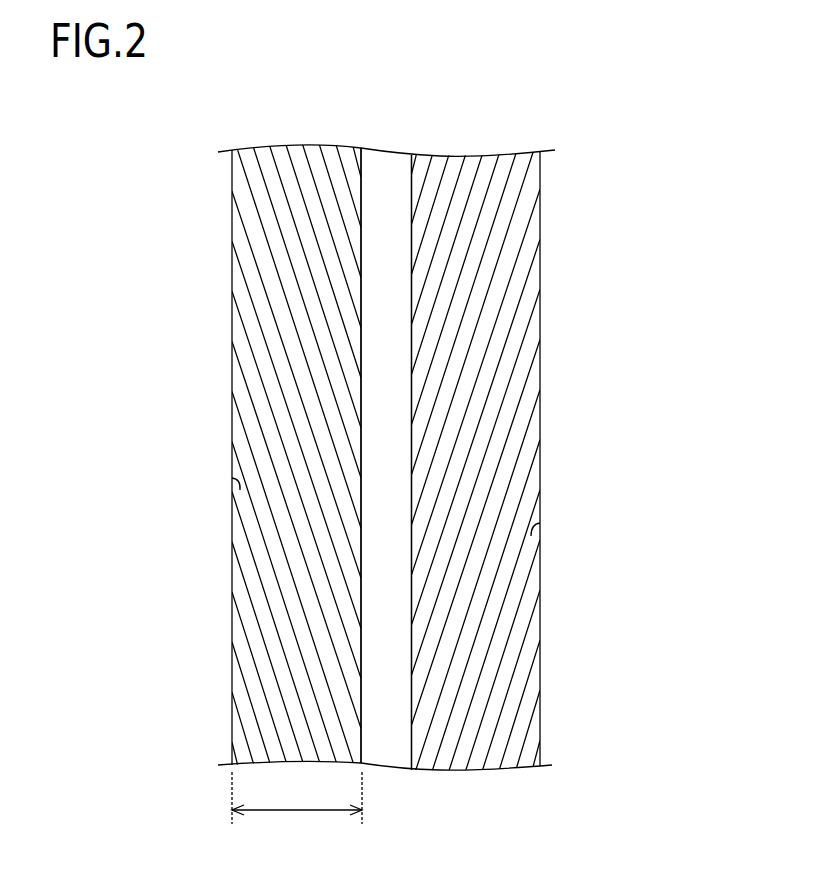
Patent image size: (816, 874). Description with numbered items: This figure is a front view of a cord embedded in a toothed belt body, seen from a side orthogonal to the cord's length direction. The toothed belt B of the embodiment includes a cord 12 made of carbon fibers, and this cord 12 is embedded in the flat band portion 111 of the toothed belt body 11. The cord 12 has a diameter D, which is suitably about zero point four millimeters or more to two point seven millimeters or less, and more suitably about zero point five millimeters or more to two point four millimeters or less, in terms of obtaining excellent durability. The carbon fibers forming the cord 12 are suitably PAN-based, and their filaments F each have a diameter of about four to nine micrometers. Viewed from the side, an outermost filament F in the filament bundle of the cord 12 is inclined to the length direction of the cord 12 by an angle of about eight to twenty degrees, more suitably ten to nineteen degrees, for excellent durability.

The cord 12 is at (283, 268).
The flat band portion 111 is at (392, 406).
The toothed belt body 11 is at (526, 459).
The toothed belt B is at (386, 112).
The filament F is at (283, 611).
The diameter D is at (297, 798).